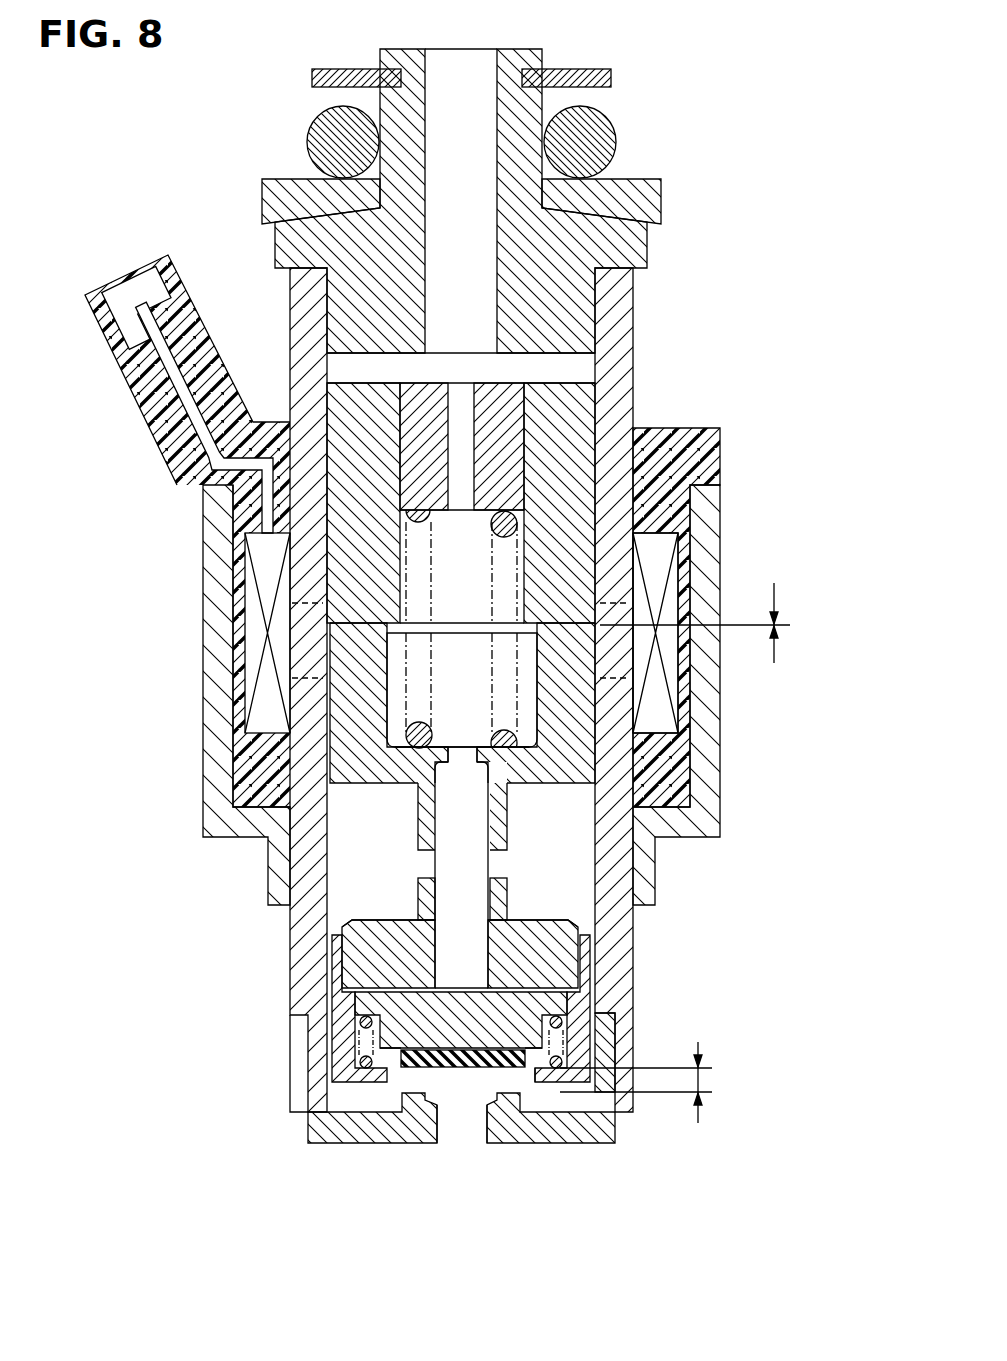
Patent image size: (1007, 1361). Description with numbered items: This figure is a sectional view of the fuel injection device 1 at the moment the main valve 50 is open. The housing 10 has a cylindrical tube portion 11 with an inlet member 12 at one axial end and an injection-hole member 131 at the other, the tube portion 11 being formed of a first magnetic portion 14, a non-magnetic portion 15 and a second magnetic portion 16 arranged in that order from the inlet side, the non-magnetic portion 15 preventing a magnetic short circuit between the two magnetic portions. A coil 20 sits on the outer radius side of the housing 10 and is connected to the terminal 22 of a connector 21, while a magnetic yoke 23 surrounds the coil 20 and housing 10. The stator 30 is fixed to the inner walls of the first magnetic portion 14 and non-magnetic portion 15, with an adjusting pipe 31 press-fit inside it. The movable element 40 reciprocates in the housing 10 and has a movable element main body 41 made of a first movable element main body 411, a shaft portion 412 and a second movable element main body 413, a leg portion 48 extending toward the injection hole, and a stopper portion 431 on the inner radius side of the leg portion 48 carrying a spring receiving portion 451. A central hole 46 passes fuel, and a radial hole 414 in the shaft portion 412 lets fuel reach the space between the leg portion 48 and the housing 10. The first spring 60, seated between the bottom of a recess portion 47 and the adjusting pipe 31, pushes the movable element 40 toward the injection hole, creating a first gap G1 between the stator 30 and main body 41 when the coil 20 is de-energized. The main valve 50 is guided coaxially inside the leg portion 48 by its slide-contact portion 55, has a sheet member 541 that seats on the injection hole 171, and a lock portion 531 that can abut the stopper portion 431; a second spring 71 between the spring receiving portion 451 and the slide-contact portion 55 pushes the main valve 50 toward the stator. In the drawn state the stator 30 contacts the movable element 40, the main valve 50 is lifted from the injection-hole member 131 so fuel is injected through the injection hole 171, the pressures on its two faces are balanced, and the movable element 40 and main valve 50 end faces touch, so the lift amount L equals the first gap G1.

The fuel injection device 1 is at (662, 98).
The housing 10 is at (342, 682).
The tube portion 11 is at (341, 641).
The inlet member 12 is at (628, 252).
The first magnetic portion 14 is at (312, 563).
The non-magnetic portion 15 is at (312, 650).
The second magnetic portion 16 is at (303, 705).
The coil 20 is at (240, 734).
The connector 21 is at (157, 408).
The terminal 22 is at (138, 302).
The yoke 23 is at (218, 803).
The stator 30 is at (572, 418).
The adjusting pipe 31 is at (505, 412).
The movable element 40 is at (420, 834).
The movable element main body 41 is at (565, 786).
The hole 46 is at (560, 748).
The recess portion 47 is at (487, 743).
The leg portion 48 is at (590, 1040).
The main valve 50 is at (400, 1032).
The slide-contact portion 55 is at (367, 1003).
The first spring 60 is at (515, 557).
The second spring 71 is at (295, 1060).
The injection-hole member 131 is at (345, 1137).
The injection hole 171 is at (457, 1127).
The first movable element main body 411 is at (467, 756).
The shaft portion 412 is at (500, 835).
The second movable element main body 413 is at (543, 952).
The hole 414 is at (500, 865).
The stopper portion 431 is at (537, 1072).
The spring receiving portion 451 is at (557, 1070).
The lock portion 531 is at (528, 1060).
The sheet member 541 is at (430, 1067).
The first gap G1 is at (714, 623).
The lift amount L is at (643, 1082).